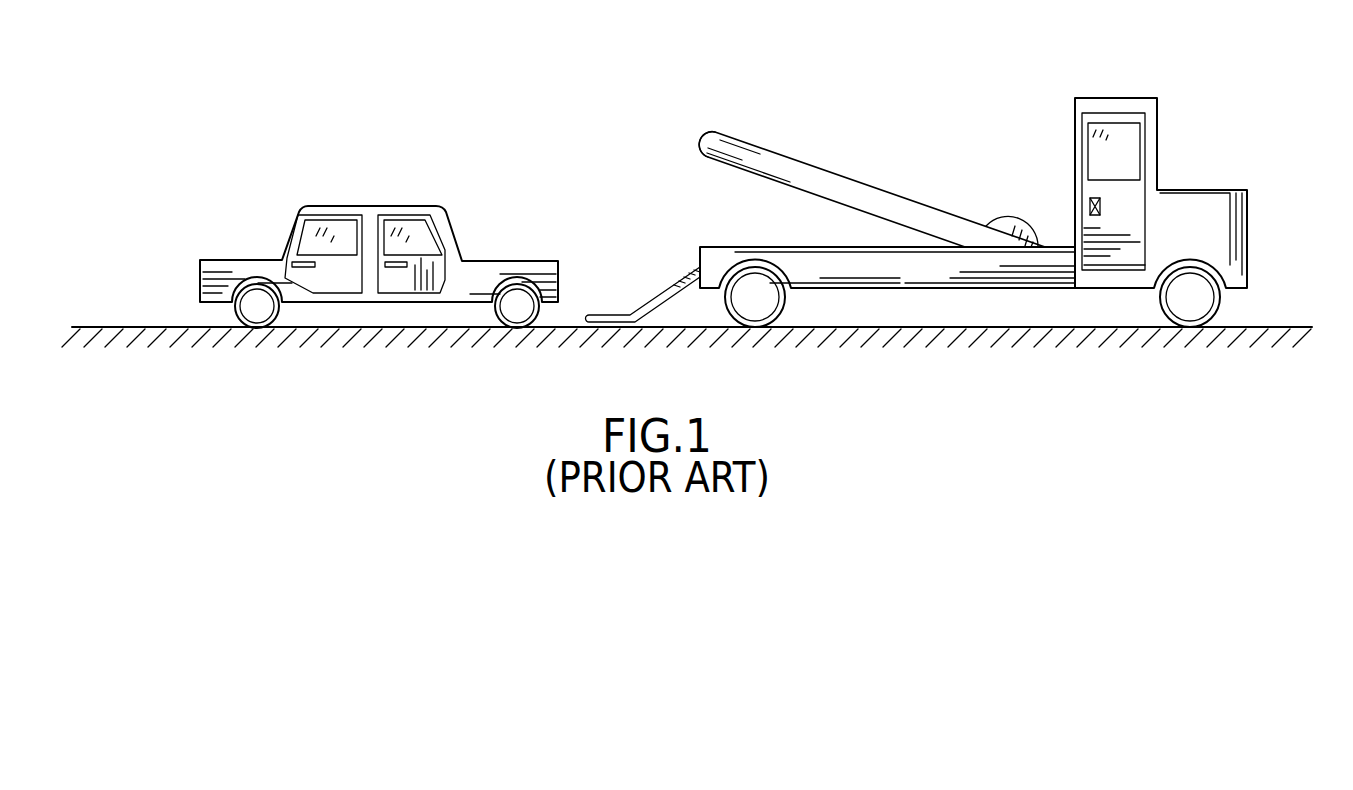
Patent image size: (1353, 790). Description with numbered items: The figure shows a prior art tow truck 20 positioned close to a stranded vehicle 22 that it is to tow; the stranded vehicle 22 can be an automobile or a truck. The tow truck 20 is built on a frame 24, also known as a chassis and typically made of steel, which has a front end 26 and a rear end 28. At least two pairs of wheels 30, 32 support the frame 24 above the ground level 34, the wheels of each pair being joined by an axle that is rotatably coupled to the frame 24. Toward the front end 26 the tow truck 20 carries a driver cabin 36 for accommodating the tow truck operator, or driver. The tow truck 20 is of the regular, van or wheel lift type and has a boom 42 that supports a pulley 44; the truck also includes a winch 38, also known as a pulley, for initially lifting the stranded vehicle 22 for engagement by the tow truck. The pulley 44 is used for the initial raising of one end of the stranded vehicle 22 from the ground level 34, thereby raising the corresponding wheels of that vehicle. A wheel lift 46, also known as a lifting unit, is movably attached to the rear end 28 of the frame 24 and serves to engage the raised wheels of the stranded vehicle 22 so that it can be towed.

The tow truck 20 is at (957, 112).
The stranded vehicle 22 is at (410, 186).
The frame 24 is at (910, 270).
The front end 26 is at (1191, 193).
The rear end 28 is at (702, 257).
The wheels 30 is at (787, 303).
The wheels 32 is at (1152, 303).
The ground level 34 is at (1270, 327).
The driver cabin 36 is at (1153, 147).
The winch 38 is at (1000, 215).
The boom 42 is at (821, 173).
The pulley 44 is at (708, 138).
The wheel lift 46 is at (647, 300).